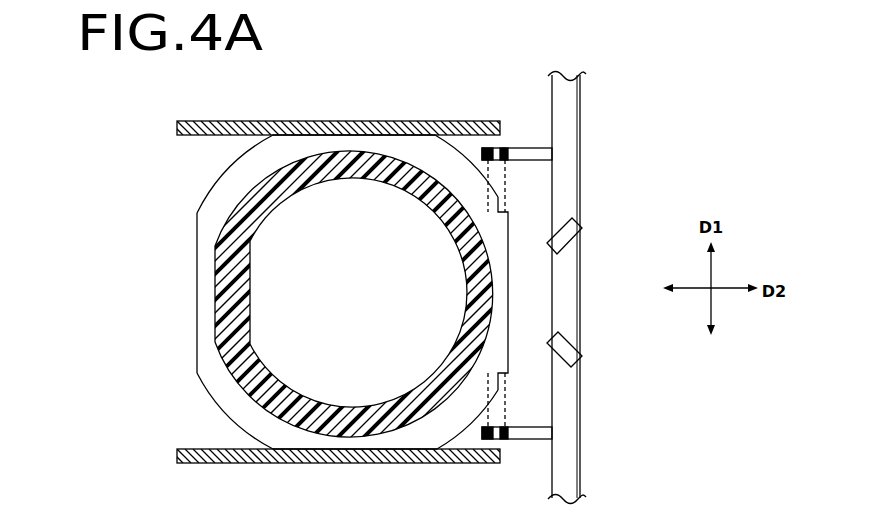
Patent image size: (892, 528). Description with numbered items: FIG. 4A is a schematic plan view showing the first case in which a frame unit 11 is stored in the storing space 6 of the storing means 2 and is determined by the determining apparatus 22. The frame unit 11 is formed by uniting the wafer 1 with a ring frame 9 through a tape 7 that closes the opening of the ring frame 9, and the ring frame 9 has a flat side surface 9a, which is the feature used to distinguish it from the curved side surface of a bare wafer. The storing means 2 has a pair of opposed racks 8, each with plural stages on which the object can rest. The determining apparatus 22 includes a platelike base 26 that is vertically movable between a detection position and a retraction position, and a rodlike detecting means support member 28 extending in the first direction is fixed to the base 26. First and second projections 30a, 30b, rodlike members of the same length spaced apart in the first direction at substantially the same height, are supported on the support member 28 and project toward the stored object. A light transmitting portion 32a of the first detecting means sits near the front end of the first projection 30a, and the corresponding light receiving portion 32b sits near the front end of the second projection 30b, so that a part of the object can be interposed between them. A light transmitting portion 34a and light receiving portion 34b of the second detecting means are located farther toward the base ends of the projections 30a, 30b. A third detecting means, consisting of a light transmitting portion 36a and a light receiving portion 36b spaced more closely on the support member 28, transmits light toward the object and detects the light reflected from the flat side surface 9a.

The wafer 1 is at (268, 265).
The storing means 2 is at (156, 453).
The storing space 6 is at (221, 160).
The tape 7 is at (240, 376).
The rack 8 is at (228, 121).
The ring frame 9 is at (207, 358).
The flat side surface 9a is at (510, 352).
The frame unit 11 is at (186, 280).
The determining apparatus 22 is at (642, 93).
The base 26 is at (588, 143).
The detecting means support member 28 is at (572, 185).
The first projection 30a is at (526, 141).
The second projection 30b is at (521, 448).
The light transmitting portion 32a is at (488, 147).
The light receiving portion 32b is at (488, 441).
The light transmitting portion 34a is at (505, 147).
The light receiving portion 34b is at (505, 441).
The light transmitting portion 36a is at (579, 232).
The light receiving portion 36b is at (580, 357).